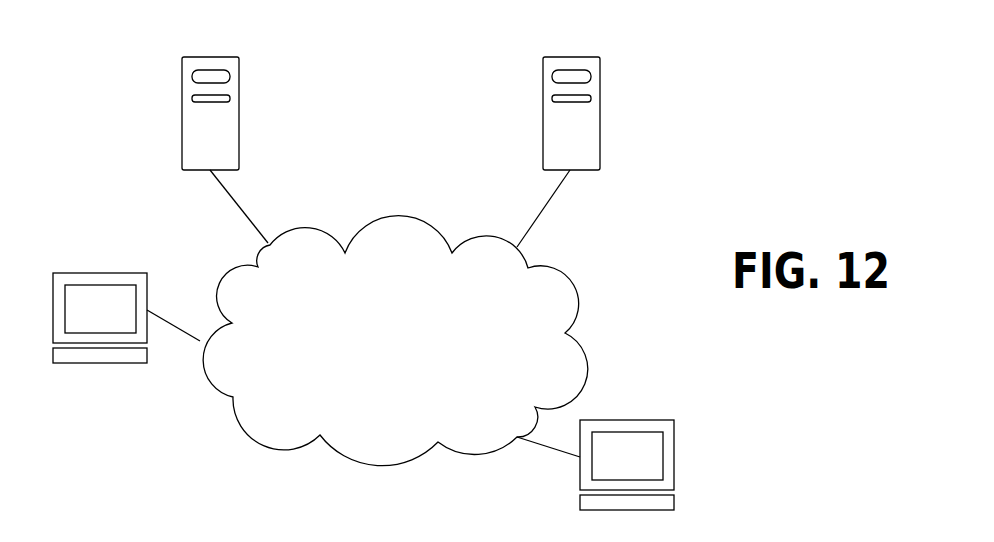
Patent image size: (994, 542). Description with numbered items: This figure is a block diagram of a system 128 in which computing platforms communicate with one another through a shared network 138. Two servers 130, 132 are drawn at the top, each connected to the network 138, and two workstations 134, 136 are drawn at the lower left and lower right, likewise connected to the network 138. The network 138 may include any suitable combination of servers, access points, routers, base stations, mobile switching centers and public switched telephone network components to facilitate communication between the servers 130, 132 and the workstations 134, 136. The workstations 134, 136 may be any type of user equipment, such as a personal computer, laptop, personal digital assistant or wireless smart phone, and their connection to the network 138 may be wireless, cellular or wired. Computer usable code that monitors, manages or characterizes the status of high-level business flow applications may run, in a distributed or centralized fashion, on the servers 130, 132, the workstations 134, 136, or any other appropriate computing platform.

The system 128 is at (405, 33).
The server 130 is at (182, 114).
The server 132 is at (600, 114).
The workstation 134 is at (100, 363).
The workstation 136 is at (675, 457).
The network 138 is at (393, 217).